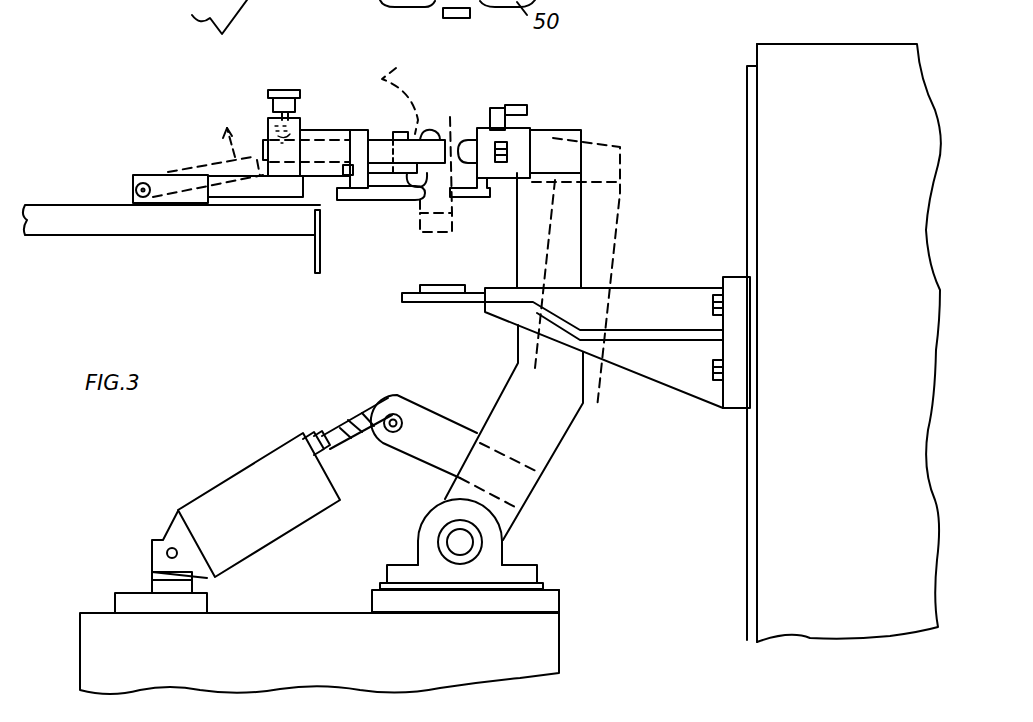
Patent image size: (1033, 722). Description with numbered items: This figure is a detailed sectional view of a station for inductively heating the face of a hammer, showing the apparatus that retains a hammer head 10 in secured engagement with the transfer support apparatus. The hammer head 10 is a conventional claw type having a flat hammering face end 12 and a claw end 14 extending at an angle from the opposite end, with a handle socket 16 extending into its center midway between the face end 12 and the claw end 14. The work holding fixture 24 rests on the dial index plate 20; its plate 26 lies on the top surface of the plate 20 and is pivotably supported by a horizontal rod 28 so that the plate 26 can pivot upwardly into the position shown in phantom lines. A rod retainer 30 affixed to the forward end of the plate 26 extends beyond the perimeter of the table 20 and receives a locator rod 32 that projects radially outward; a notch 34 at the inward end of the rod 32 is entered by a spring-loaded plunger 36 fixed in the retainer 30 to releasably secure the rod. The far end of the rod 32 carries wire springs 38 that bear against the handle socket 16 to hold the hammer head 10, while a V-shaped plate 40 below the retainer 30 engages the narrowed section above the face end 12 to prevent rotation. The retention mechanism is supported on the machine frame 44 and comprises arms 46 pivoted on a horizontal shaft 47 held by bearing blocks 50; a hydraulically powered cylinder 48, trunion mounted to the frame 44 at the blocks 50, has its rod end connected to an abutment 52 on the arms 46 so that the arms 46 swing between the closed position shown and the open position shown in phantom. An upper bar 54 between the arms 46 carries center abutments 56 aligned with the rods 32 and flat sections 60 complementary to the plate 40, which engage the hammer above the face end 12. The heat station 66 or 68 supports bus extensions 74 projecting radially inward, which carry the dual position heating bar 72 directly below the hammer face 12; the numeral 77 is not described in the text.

The hammer head 10 is at (462, 140).
The face end 12 is at (423, 233).
The claw end 14 is at (407, 52).
The handle socket 16 is at (407, 130).
The dial index plate 20 is at (97, 232).
The work holding fixture 24 is at (190, 148).
The plate 26 is at (262, 198).
The horizontal rod 28 is at (133, 185).
The rod retainer 30 is at (325, 130).
The locator rod 32 is at (432, 150).
The notch 34 is at (300, 140).
The spring-loaded plunger 36 is at (278, 90).
The wire springs 38 is at (425, 138).
The plate 40 is at (373, 200).
The machine frame 44 is at (265, 637).
The arms 46 is at (567, 242).
The horizontal shaft 47 is at (460, 542).
The hydraulically powered cylinder 48 is at (260, 475).
The bearing blocks 50 is at (152, 566).
The abutment 52 is at (415, 443).
The upper bar 54 is at (553, 143).
The center abutments 56 is at (480, 128).
The flat sections 60 is at (460, 197).
The heat station 66 is at (844, 321).
The heat station 68 is at (844, 343).
The dual position heating bar 72 is at (403, 297).
The bus extensions 74 is at (662, 293).
The frame wall 77 is at (812, 65).